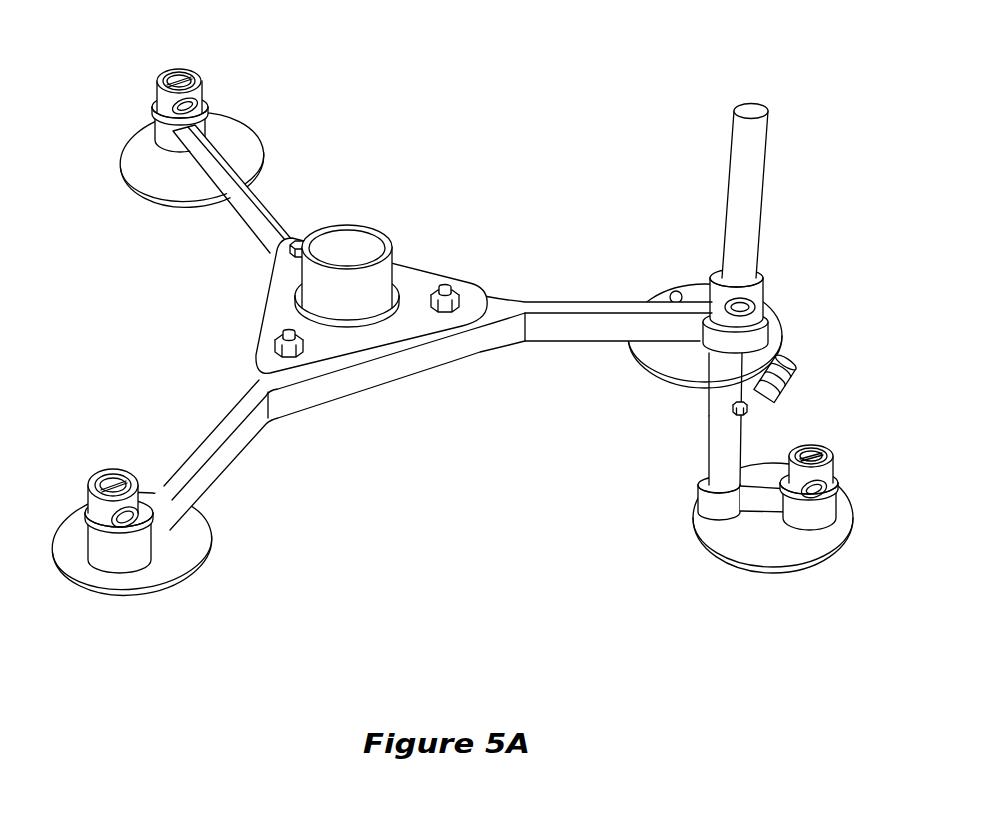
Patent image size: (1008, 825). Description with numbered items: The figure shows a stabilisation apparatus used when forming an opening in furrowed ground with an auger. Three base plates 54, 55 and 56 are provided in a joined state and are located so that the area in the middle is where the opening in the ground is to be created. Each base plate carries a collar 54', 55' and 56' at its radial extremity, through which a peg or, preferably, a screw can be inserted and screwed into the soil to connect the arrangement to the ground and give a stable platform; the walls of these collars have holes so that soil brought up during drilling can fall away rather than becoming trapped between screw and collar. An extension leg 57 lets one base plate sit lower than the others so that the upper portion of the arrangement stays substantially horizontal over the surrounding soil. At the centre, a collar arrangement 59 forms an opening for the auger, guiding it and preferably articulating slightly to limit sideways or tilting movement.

The base plate 54 is at (169, 156).
The collar 54' is at (139, 97).
The base plate 55 is at (184, 544).
The collar 55' is at (89, 503).
The base plate 56 is at (747, 503).
The collar 56' is at (840, 466).
The extension leg 57 is at (737, 163).
The collar arrangement 59 is at (303, 262).